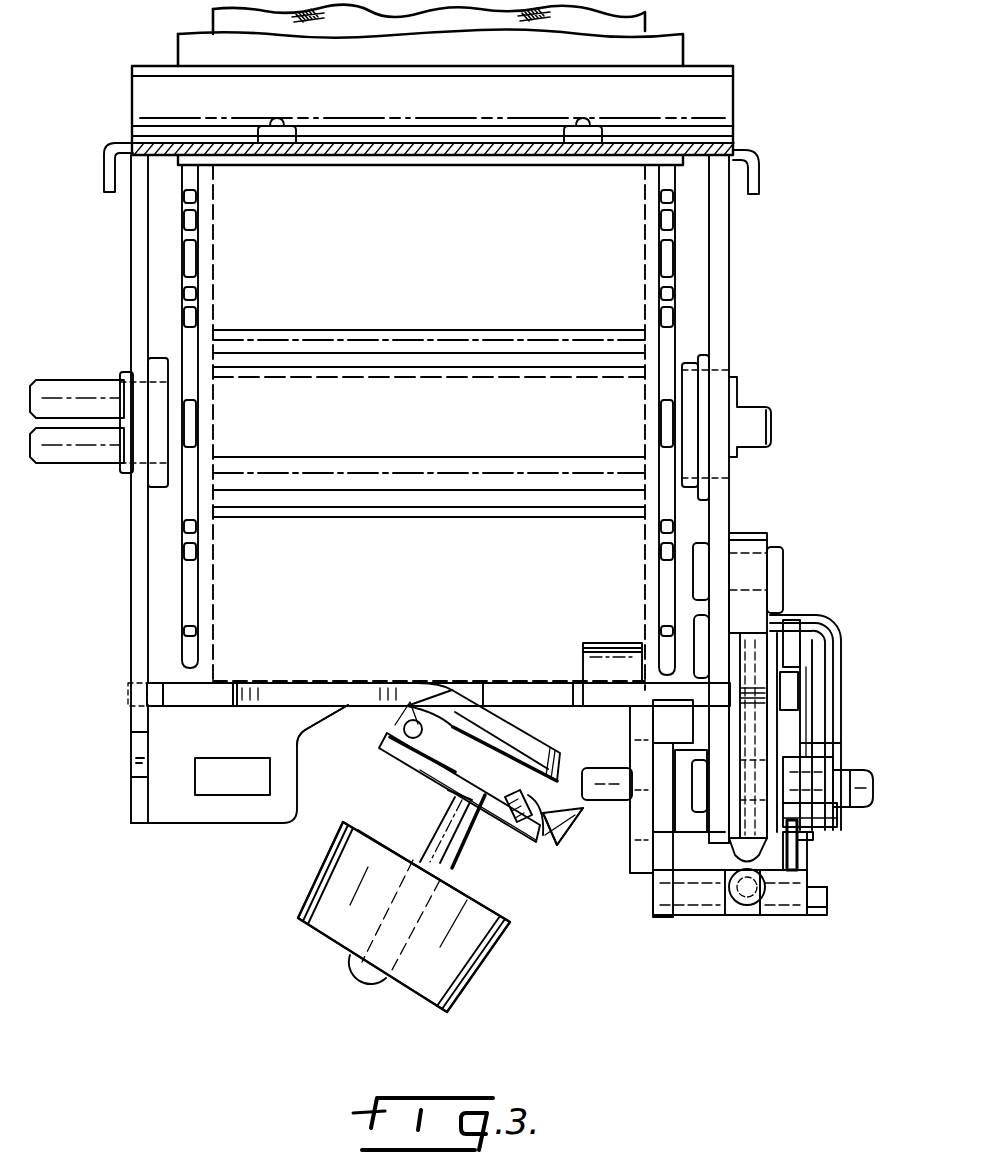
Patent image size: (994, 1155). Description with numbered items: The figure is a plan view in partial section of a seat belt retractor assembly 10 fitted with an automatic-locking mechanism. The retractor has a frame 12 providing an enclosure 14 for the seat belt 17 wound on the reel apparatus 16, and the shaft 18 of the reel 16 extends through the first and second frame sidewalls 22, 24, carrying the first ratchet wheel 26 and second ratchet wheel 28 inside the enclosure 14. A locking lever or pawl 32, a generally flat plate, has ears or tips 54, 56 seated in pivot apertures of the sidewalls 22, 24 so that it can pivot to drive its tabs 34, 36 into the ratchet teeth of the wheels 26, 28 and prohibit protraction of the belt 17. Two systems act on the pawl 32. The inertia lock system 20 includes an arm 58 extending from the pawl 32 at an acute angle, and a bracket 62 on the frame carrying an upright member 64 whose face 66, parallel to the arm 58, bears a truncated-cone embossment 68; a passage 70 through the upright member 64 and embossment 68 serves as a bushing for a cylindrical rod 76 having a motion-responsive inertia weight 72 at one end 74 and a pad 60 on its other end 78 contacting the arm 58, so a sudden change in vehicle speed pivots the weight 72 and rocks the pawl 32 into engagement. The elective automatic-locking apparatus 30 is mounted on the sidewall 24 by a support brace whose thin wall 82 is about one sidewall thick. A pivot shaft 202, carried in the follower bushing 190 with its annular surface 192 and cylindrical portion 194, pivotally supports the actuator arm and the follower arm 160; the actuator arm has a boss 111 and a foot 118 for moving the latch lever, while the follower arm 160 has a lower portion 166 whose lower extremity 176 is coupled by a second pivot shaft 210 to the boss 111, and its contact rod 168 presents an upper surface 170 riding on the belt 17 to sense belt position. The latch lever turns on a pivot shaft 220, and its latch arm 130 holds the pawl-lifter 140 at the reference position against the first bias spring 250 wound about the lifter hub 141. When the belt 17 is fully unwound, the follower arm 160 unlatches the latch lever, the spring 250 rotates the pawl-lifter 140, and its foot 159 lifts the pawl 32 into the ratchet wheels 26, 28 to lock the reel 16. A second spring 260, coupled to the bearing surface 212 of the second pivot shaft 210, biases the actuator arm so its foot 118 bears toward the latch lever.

The seat belt retractor assembly 10 is at (755, 375).
The frame 12 is at (732, 291).
The enclosure 14 is at (160, 617).
The reel apparatus 16 is at (345, 517).
The seat belt 17 is at (645, 32).
The shaft 18 is at (83, 452).
The inertia lock system 20 is at (311, 944).
The first frame sidewall 22 is at (137, 314).
The second frame sidewall 24 is at (727, 248).
The first ratchet wheel 26 is at (182, 240).
The second ratchet wheel 28 is at (659, 262).
The automatic-locking apparatus 30 is at (677, 943).
The locking lever or pawl 32 is at (297, 706).
The pawl tab 34 is at (190, 697).
The pawl tab 36 is at (640, 712).
The pawl ear 54 is at (128, 695).
The pawl ear 56 is at (712, 676).
The arm 58 is at (489, 732).
The pad 60 is at (532, 778).
The bracket 62 is at (325, 735).
The upright member 64 is at (402, 757).
The face 66 is at (392, 733).
The embossment 68 is at (544, 833).
The passage or port 70 is at (530, 835).
The inertia weight 72 is at (470, 977).
The rod end 74 is at (367, 997).
The rod 76 is at (440, 818).
The rod other end 78 is at (445, 796).
The wall 82 is at (750, 532).
The boss 111 is at (770, 920).
The foot 118 is at (810, 888).
The latch arm 130 is at (800, 700).
The pawl-lifter 140 is at (776, 610).
The hub 141 is at (812, 650).
The foot or sill 159 is at (710, 725).
The follower arm 160 is at (625, 862).
The lower portion 166 is at (660, 870).
The contact rod 168 is at (637, 743).
The upper surface 170 is at (612, 643).
The lower extremity 176 is at (677, 920).
The follower bushing 190 is at (807, 867).
The annular surface 192 is at (800, 840).
The cylindrical portion 194 is at (685, 826).
The pivot shaft 202 is at (860, 774).
The second pivot shaft 210 is at (795, 918).
The bearing surface 212 is at (737, 913).
The pivot shaft 220 is at (837, 785).
The first bias spring 250 is at (779, 618).
The second spring 260 is at (747, 907).